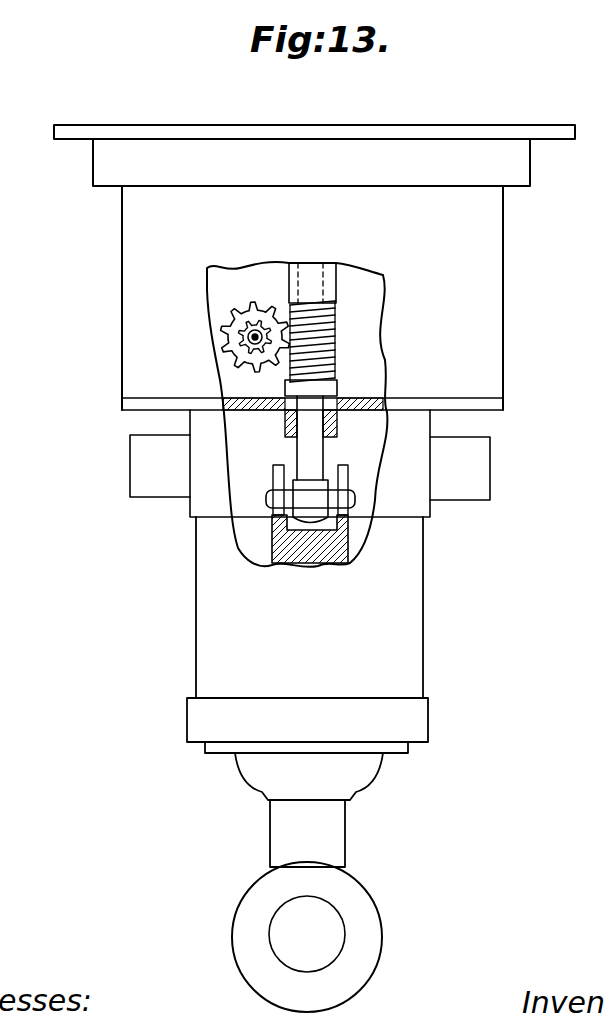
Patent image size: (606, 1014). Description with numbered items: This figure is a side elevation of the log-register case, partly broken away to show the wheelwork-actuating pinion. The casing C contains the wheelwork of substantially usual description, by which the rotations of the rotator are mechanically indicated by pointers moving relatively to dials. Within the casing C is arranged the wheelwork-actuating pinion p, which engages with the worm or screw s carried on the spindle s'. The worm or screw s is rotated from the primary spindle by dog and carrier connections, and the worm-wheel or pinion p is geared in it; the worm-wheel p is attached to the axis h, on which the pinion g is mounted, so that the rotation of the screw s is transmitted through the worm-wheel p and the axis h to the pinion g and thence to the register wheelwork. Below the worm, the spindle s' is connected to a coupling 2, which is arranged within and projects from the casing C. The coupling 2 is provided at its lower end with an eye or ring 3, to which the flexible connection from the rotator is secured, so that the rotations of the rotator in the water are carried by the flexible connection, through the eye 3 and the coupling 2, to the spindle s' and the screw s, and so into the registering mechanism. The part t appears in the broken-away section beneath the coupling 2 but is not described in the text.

The casing C is at (423, 612).
The eye or ring 3 is at (370, 907).
The worm or screw s is at (355, 329).
The spindle s' is at (322, 438).
The coupling 2 is at (345, 527).
The bearing block t is at (258, 532).
The wheelwork-actuating pinion p is at (243, 331).
The pinion g is at (246, 339).
The axis h is at (251, 344).